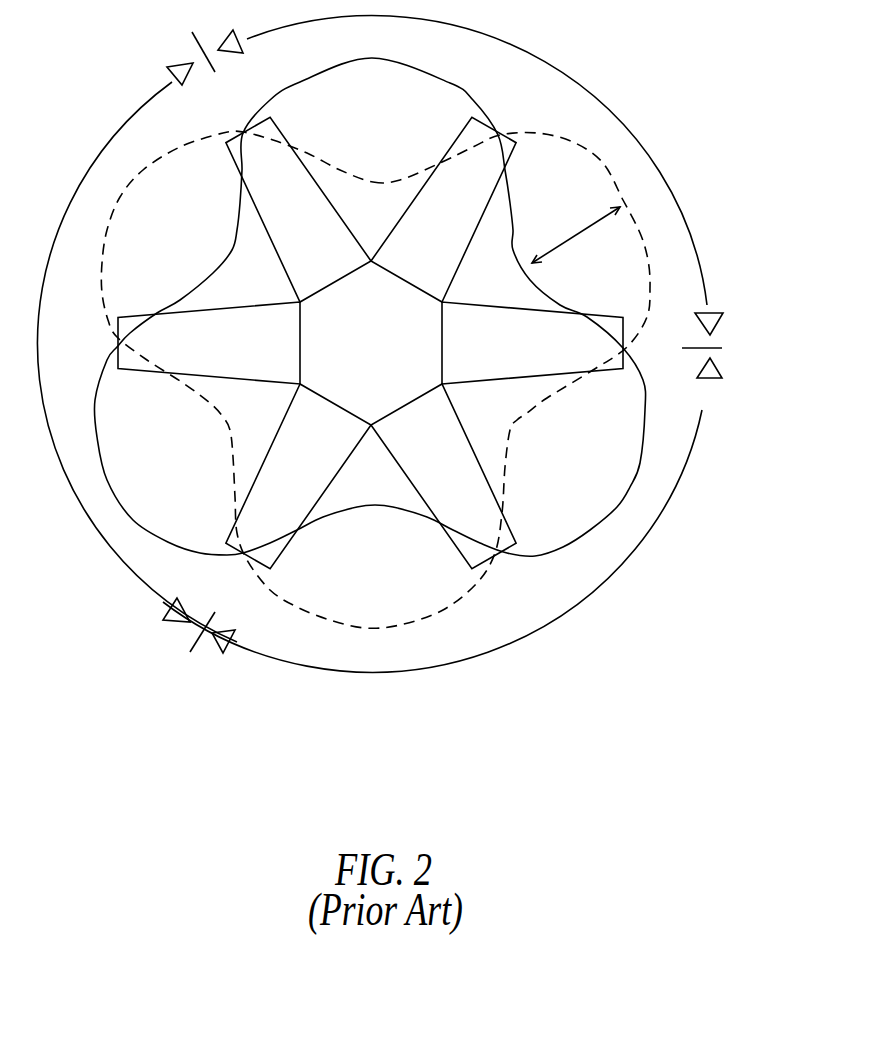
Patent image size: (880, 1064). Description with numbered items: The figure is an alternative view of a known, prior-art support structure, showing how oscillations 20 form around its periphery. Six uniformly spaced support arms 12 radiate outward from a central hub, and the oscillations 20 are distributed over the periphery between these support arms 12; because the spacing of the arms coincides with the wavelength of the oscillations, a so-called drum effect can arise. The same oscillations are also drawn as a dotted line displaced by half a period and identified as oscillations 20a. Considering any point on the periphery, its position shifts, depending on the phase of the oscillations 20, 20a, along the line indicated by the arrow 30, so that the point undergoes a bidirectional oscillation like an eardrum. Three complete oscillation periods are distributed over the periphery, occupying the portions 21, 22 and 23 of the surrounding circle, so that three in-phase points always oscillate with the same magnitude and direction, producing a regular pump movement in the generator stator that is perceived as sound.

The support arms 12 is at (301, 207).
The oscillations 20 is at (369, 307).
The oscillations displaced by half a period 20a is at (375, 379).
The portion 21 is at (470, 175).
The portion 22 is at (442, 510).
The portion 23 is at (137, 342).
The arrow 30 is at (574, 240).